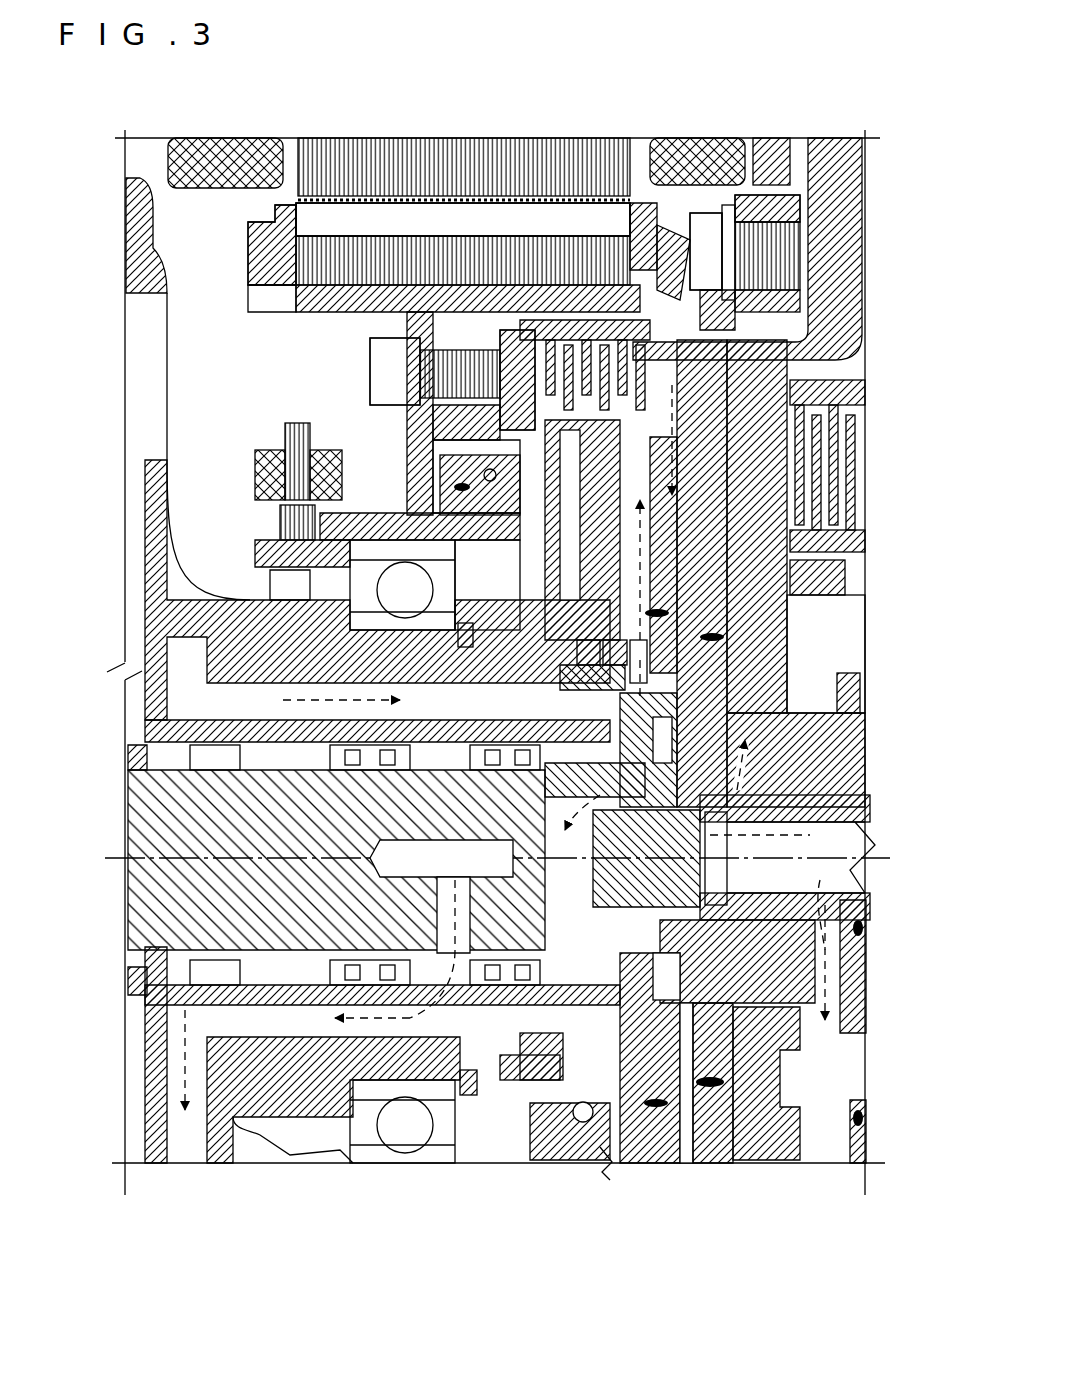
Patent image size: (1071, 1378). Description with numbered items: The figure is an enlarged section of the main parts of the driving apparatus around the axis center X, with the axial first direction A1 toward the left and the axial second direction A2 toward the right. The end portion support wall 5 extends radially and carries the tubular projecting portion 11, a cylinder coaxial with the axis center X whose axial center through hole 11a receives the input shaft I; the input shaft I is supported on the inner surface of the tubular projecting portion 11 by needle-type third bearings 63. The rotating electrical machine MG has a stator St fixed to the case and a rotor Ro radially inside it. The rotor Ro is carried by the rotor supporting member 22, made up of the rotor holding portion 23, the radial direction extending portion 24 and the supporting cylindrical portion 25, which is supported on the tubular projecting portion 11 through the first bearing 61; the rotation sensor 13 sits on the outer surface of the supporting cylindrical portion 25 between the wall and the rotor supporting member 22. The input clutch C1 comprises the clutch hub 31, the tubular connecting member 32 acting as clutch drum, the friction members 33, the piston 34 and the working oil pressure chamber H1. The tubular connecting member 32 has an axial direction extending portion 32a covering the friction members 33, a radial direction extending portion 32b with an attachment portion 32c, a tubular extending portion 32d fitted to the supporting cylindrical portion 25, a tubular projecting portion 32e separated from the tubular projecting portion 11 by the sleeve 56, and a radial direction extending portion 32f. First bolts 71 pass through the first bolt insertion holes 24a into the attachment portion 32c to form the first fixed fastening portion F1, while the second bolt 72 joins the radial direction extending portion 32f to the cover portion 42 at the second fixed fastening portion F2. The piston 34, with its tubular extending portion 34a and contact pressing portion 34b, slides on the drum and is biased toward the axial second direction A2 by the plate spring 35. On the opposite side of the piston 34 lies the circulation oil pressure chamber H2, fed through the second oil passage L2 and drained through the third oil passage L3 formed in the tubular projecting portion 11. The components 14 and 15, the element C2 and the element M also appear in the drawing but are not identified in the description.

The end portion support wall 5 is at (140, 263).
The rotation sensor 13 is at (230, 472).
The tubular projecting portion 11 is at (328, 1077).
The axial center through hole 11a is at (147, 977).
The stator St is at (388, 140).
The rotating electrical machine MG is at (433, 133).
The rotor Ro is at (298, 193).
The tubular connecting member 32 is at (533, 240).
The axial direction extending portion 32a is at (585, 320).
The radial direction extending portion 32b is at (457, 497).
The attachment portion 32c is at (467, 330).
The tubular extending portion 32d is at (503, 500).
The tubular projecting portion 32e is at (619, 617).
The radial direction extending portion 32f is at (727, 213).
The rotor supporting member 22 is at (248, 262).
The rotor holding portion 23 is at (257, 293).
The radial direction extending portion 24 is at (407, 447).
The first bolt insertion holes 24a is at (377, 357).
The supporting cylindrical portion 25 is at (353, 513).
The resolver stator 14 is at (283, 523).
The resolver 15 is at (287, 440).
The friction member 33 is at (610, 340).
The piston 34 is at (553, 1133).
The tubular extending portion 34a is at (565, 450).
The contact pressing portion 34b is at (550, 330).
The plate spring 35 is at (510, 443).
The cover portion 42 is at (825, 147).
The first fixed fastening portion F1 is at (350, 370).
The second fixed fastening portion F2 is at (790, 197).
The first bolts 71 is at (377, 363).
The second bolt 72 is at (697, 213).
The input clutch C1 is at (622, 340).
The second clutch C2 is at (867, 447).
The clutch hub 31 is at (657, 527).
The third bearing 63 is at (503, 753).
The first bearing 61 is at (413, 1143).
The sleeve 56 is at (533, 1077).
The working oil pressure chamber H1 is at (563, 1153).
The circulation oil pressure chamber H2 is at (640, 1133).
The second oil passage L2 is at (390, 700).
The third oil passage L3 is at (293, 1013).
The input shaft I is at (137, 810).
The intermediate shaft M is at (863, 813).
The axis center X is at (485, 857).
The axial first direction A1 is at (330, 1288).
The axial second direction A2 is at (330, 1288).